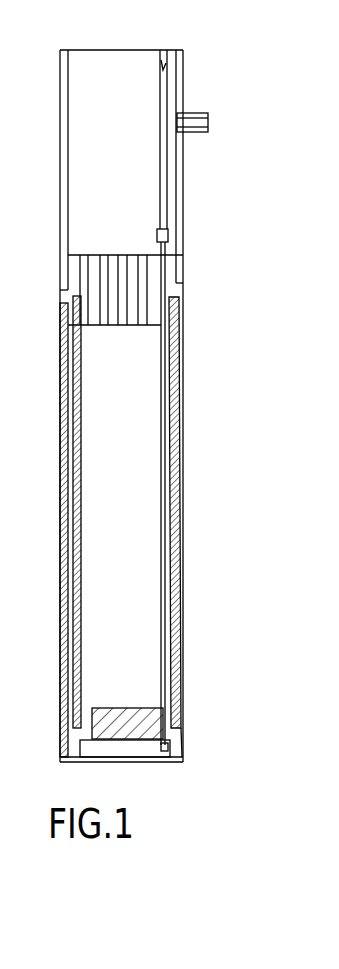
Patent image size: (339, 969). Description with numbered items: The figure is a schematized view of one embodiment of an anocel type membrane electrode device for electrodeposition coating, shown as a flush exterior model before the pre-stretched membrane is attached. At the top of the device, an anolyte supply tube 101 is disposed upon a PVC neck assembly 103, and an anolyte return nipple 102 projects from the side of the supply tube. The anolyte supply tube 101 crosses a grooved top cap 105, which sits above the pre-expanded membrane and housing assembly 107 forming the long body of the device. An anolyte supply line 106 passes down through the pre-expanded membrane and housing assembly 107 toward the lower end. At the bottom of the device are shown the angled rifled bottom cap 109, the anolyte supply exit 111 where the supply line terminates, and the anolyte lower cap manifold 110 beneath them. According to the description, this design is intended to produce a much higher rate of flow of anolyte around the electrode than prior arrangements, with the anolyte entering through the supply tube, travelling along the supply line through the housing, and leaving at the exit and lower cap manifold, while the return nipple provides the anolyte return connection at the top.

The anolyte supply tube 101 is at (163, 74).
The anolyte return nipple 102 is at (208, 132).
The PVC neck assembly 103 is at (183, 102).
The grooved top cap 105 is at (146, 283).
The anolyte supply line 106 is at (166, 347).
The pre-expanded membrane and housing assembly 107 is at (179, 405).
The angled rifled bottom cap 109 is at (152, 712).
The anolyte lower cap manifold 110 is at (147, 752).
The anolyte supply exit 111 is at (170, 741).